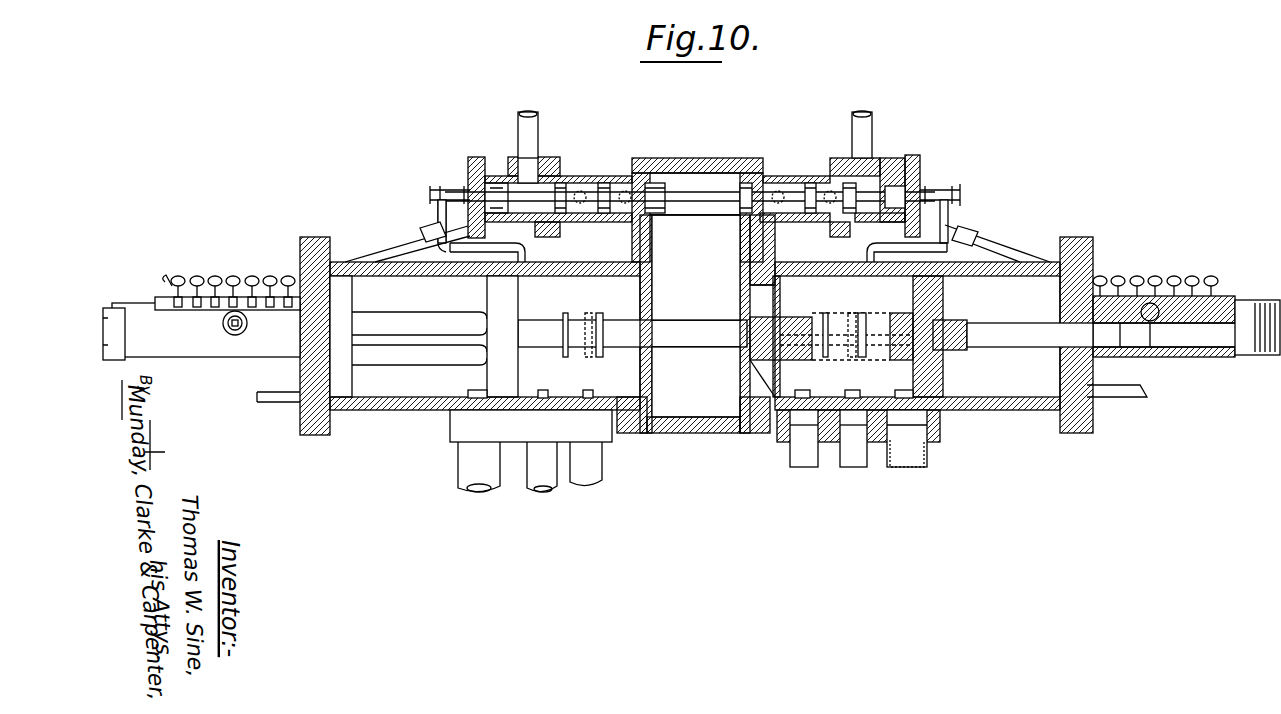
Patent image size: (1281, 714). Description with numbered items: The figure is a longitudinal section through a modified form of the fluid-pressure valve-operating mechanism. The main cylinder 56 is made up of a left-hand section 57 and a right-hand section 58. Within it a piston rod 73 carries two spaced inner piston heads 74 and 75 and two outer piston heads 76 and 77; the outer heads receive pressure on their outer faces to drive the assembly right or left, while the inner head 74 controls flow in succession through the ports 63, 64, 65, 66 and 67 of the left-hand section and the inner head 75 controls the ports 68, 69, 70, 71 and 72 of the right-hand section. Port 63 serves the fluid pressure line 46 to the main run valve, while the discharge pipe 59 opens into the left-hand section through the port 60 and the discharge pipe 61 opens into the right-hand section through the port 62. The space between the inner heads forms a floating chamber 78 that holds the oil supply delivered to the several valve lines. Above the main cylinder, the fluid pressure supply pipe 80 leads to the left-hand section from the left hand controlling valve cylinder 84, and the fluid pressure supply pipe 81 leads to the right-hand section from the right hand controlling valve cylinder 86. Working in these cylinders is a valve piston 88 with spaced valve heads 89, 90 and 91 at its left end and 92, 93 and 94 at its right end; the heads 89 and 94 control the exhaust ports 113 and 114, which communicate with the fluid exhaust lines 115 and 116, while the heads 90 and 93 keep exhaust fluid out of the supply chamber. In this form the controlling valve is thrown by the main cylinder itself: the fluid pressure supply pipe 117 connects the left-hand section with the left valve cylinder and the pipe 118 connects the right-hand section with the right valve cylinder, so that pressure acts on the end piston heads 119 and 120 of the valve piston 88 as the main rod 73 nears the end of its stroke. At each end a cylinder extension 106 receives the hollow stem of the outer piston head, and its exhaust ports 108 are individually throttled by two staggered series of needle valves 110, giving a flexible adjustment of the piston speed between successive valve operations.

The fluid pressure line 46 is at (540, 472).
The cylinder 56 is at (708, 430).
The left-hand section 57 is at (390, 405).
The right-hand section 58 is at (1022, 408).
The discharge pipe 59 is at (465, 470).
The port 60 is at (478, 390).
The discharge pipe 61 is at (916, 455).
The port 62 is at (905, 384).
The port 63 is at (546, 384).
The port 64 is at (566, 313).
The port 65 is at (590, 390).
The port 66 is at (588, 313).
The port 67 is at (603, 313).
The port 68 is at (862, 313).
The port 69 is at (851, 313).
The port 70 is at (858, 384).
The port 71 is at (825, 318).
The port 72 is at (808, 384).
The piston rod 73 is at (428, 322).
The inner piston head 74 is at (502, 336).
The inner piston head 75 is at (780, 336).
The outer piston head 76 is at (339, 336).
The outer piston head 77 is at (925, 298).
The floating chamber 78 is at (703, 303).
The fluid pressure supply pipe 80 is at (410, 245).
The fluid pressure supply pipe 81 is at (990, 248).
The left hand controlling valve cylinder 84 is at (582, 176).
The right hand controlling valve cylinder 86 is at (778, 176).
The valve piston 88 is at (702, 192).
The valve head 89 is at (560, 183).
The valve head 90 is at (604, 183).
The valve head 91 is at (660, 158).
The valve head 92 is at (748, 173).
The valve head 93 is at (812, 183).
The valve head 94 is at (860, 183).
The cylinder extension 106 is at (238, 352).
The exhaust port 108 is at (1160, 325).
The needle valve 110 is at (250, 275).
The port 113 is at (535, 232).
The port 114 is at (840, 158).
The fluid exhaust line 115 is at (528, 118).
The fluid exhaust line 116 is at (860, 118).
The fluid pressure supply pipe 117 is at (440, 188).
The fluid pressure supply pipe 118 is at (960, 196).
The piston head 119 is at (497, 183).
The piston head 120 is at (908, 158).